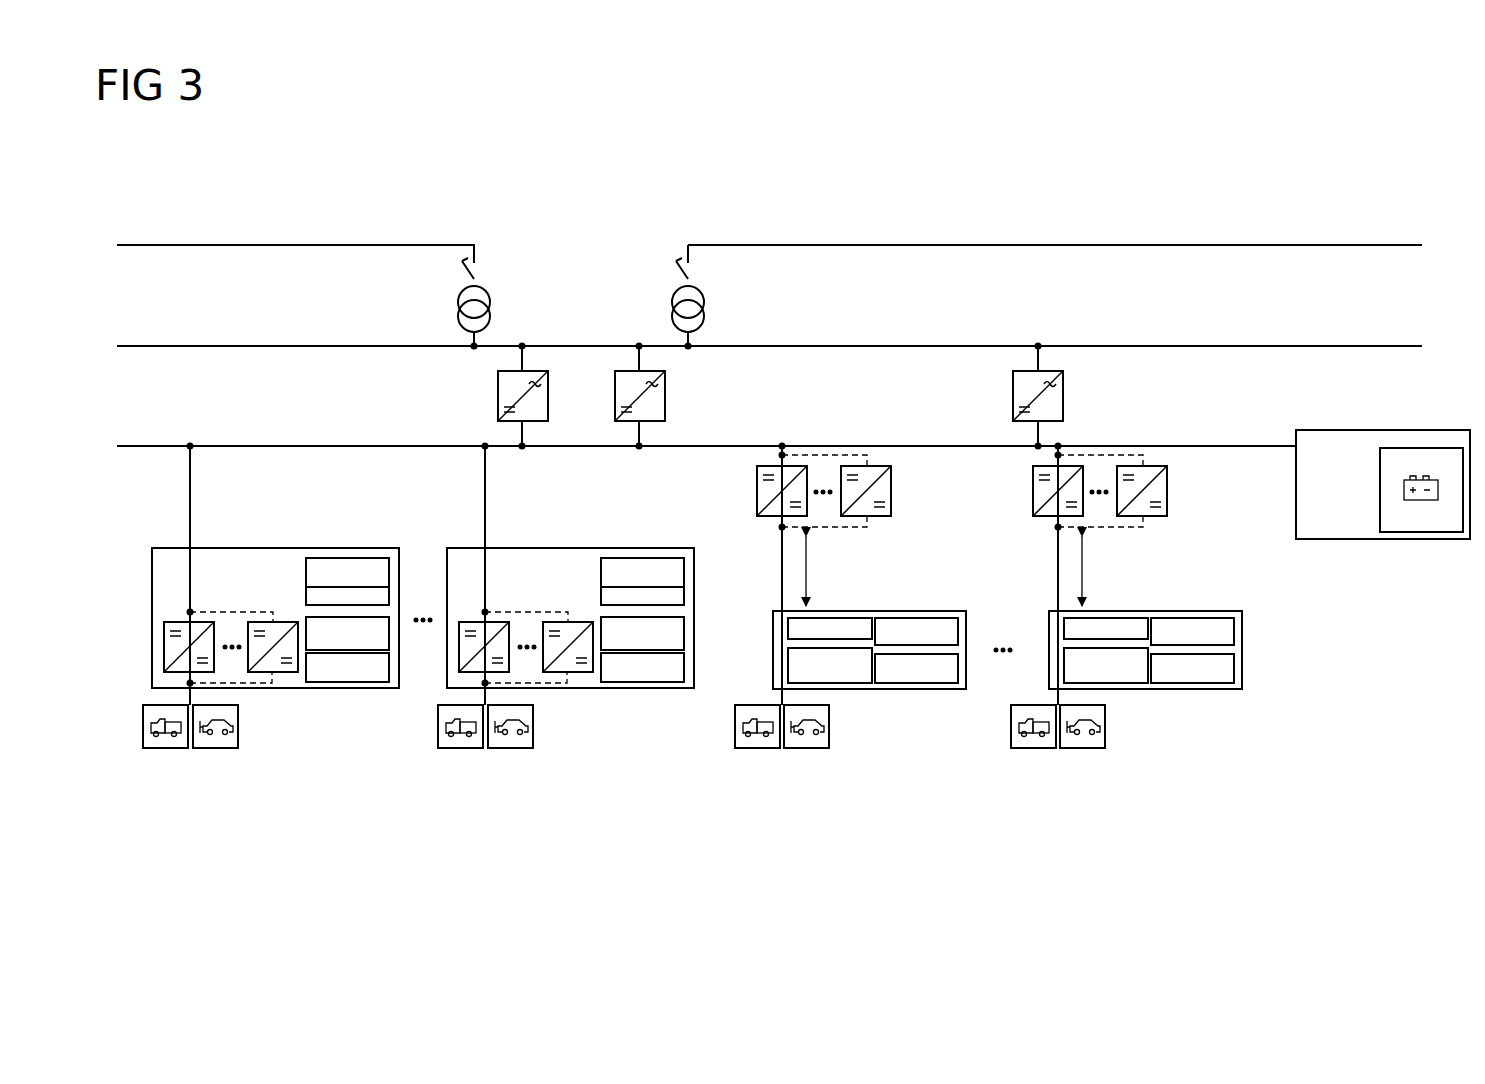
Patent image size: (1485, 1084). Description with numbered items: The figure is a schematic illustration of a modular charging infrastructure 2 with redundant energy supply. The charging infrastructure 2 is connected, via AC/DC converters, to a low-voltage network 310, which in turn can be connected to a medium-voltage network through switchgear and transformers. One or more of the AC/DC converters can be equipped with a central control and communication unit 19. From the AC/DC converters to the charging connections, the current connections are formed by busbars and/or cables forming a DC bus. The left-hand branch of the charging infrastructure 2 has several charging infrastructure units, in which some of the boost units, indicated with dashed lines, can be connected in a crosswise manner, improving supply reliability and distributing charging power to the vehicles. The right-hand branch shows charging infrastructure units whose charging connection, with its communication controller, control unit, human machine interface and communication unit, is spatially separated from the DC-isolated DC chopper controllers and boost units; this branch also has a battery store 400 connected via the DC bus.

The charging infrastructure 2 is at (627, 173).
The central control and communication unit 19 is at (1013, 410).
The low-voltage network 310 is at (913, 346).
The battery store 400 is at (1440, 430).